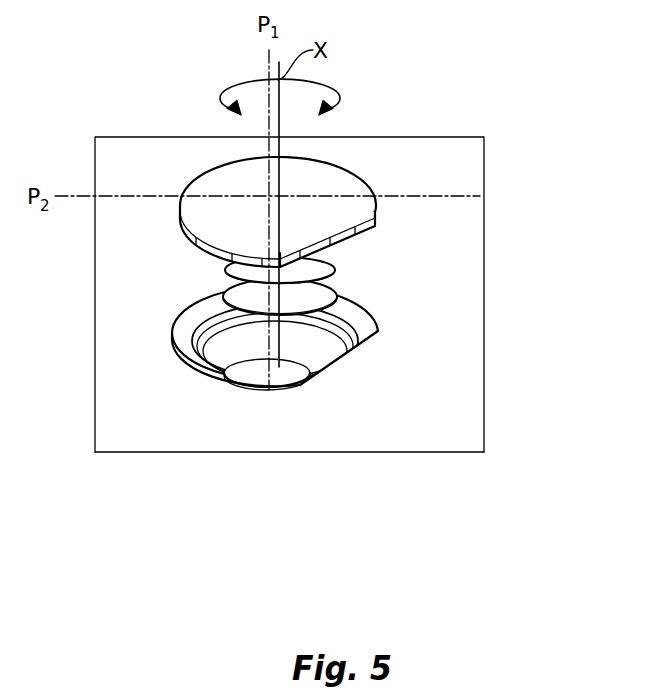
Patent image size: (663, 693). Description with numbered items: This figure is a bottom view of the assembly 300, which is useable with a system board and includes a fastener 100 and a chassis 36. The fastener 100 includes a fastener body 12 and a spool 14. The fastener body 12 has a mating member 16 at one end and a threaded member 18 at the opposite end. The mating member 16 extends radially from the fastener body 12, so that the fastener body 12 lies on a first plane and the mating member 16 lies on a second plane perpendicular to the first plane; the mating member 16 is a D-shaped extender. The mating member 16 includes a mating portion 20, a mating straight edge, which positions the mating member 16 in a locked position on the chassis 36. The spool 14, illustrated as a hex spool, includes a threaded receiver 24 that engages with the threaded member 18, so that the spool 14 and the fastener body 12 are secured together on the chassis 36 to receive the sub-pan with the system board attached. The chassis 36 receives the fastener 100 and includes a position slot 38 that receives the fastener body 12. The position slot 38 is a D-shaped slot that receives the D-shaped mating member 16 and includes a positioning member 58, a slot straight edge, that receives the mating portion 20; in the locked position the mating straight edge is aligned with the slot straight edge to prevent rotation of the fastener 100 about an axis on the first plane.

The assembly 300 is at (171, 131).
The mating member 16 is at (333, 181).
The mating portion 20 is at (380, 240).
The fastener 100 is at (364, 270).
The fastener body 12 is at (337, 287).
The threaded receiver 24 is at (375, 326).
The spool 14 is at (313, 355).
The threaded member 18 is at (250, 300).
The position slot 38 is at (195, 376).
The chassis 36 is at (172, 436).
The positioning member 58 is at (328, 375).